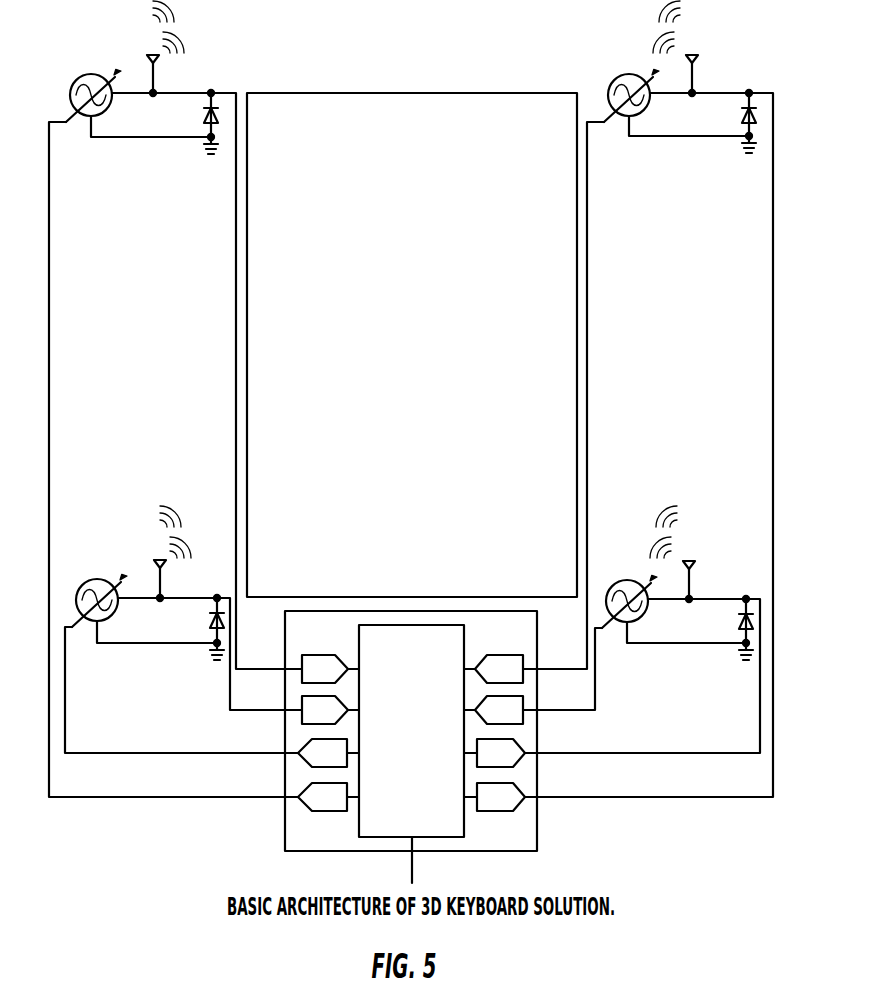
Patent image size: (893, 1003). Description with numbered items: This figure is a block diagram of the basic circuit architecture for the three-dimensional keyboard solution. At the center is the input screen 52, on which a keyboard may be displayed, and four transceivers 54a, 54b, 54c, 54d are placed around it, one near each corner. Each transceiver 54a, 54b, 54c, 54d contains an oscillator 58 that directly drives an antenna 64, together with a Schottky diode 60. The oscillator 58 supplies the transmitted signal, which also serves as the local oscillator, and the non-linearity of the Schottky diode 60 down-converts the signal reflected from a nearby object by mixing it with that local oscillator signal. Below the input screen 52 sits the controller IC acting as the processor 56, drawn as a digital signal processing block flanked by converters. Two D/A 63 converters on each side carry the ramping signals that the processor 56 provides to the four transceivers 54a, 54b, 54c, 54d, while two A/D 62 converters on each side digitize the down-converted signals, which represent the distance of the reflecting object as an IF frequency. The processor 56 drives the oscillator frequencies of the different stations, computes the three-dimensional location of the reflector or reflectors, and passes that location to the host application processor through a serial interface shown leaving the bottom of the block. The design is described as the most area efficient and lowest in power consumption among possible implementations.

The input screen 52 is at (412, 345).
The transceiver 54a is at (211, 74).
The transceiver 54b is at (736, 74).
The transceiver 54c is at (134, 720).
The transceiver 54d is at (648, 720).
The processor 56 is at (423, 747).
The oscillator 58 is at (86, 76).
The Schottky diode 60 is at (204, 118).
The A/D 62 is at (308, 812).
The D/A 63 is at (305, 655).
The antenna 64 is at (153, 55).